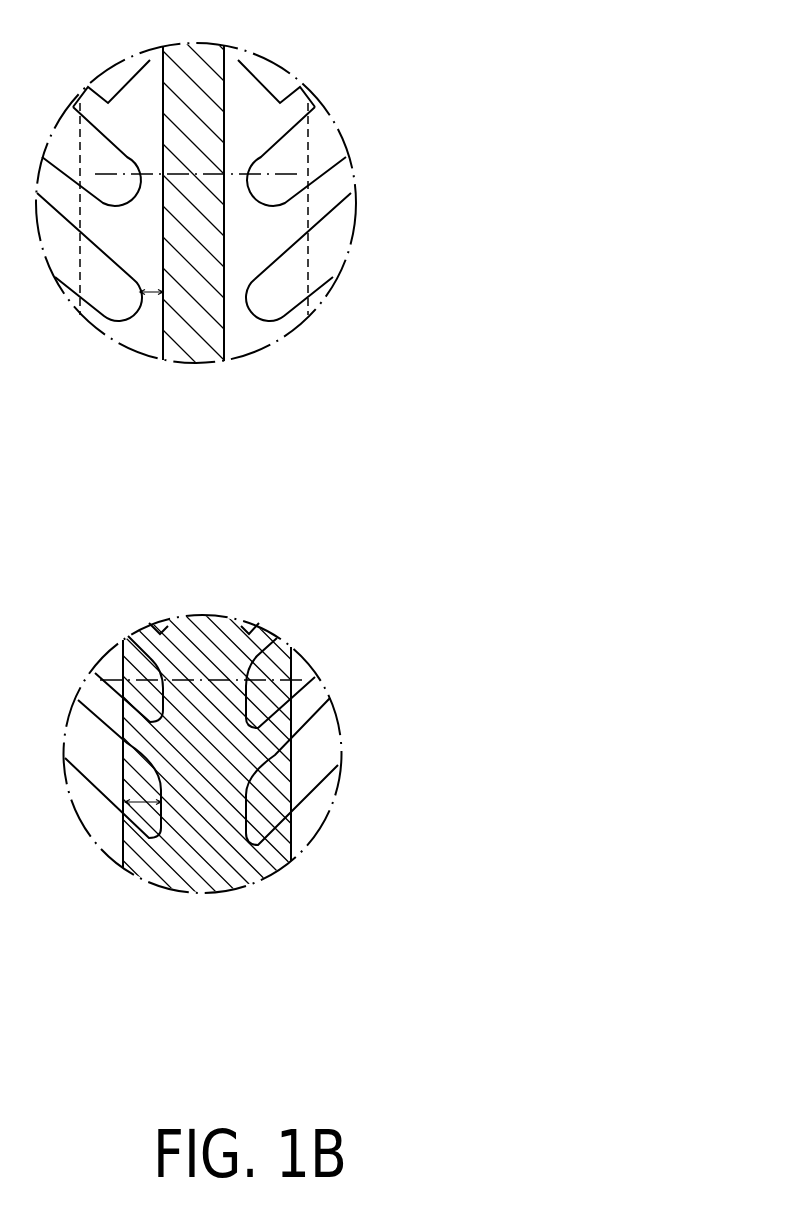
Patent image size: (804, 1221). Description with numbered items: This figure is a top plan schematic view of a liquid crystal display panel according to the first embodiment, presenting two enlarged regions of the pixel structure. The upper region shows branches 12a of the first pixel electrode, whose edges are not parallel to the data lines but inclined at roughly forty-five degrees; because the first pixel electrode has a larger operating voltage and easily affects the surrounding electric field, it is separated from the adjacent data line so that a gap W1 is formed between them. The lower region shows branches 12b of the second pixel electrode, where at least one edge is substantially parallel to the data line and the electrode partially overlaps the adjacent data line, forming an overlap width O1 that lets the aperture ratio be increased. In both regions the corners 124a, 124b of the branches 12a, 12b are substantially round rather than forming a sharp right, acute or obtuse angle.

The branch of the first pixel electrode 12a is at (333, 243).
The corner of the branch of the first pixel electrode 124a is at (257, 310).
The gap W1 is at (151, 293).
The branch of the second pixel electrode 12b is at (325, 752).
The corner of the branch of the second pixel electrode 124b is at (262, 808).
The overlap width O1 is at (140, 803).